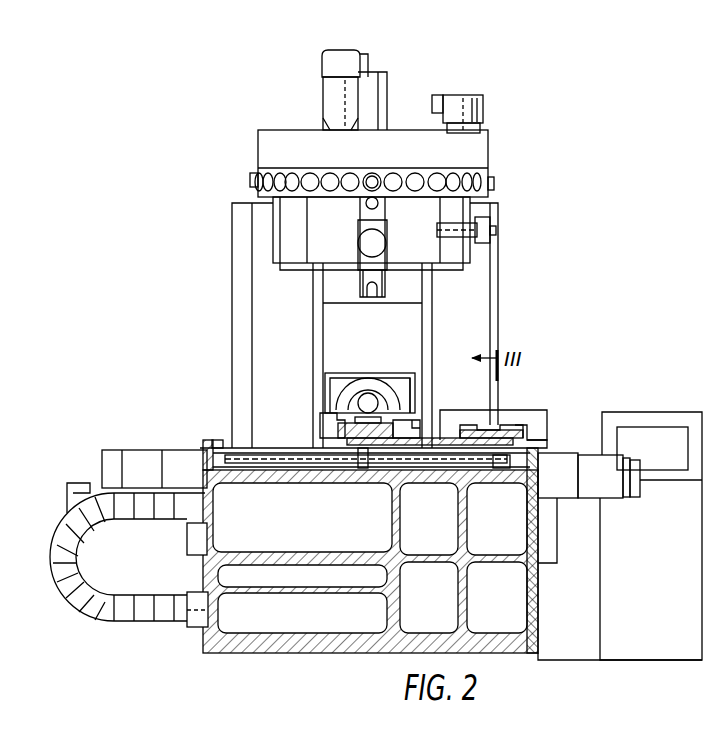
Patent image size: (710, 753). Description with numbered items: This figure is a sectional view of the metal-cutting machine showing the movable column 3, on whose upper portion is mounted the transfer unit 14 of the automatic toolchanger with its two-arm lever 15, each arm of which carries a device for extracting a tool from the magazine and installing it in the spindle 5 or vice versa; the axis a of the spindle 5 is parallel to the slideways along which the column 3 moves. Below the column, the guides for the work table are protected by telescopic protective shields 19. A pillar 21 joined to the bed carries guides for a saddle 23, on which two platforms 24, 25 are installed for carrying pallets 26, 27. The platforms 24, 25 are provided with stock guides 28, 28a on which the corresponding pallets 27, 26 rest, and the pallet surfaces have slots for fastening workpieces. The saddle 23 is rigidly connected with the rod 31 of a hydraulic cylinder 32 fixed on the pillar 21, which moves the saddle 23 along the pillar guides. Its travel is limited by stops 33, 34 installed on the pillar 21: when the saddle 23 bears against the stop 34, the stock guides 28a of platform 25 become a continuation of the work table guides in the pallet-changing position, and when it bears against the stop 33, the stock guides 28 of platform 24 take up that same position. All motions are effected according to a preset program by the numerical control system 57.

The movable column 3 is at (261, 283).
The transfer unit 14 is at (368, 247).
The two-arm lever 15 is at (382, 264).
The workpiece axis a is at (357, 412).
The spindle 5 is at (368, 398).
The platform 25 is at (397, 422).
The pallet 27 is at (332, 425).
The stock guides 28a is at (347, 421).
The saddle 23 is at (441, 438).
The stock guides 28 is at (474, 425).
The pallet 26 is at (543, 413).
The platform 24 is at (546, 433).
The stop 33 is at (217, 440).
The hydraulic cylinder 32 is at (316, 470).
The rod 31 is at (423, 462).
The pillar 21 is at (236, 577).
The telescopic protective shields 19 is at (140, 462).
The stop 34 is at (523, 450).
The numerical control system 57 is at (646, 418).